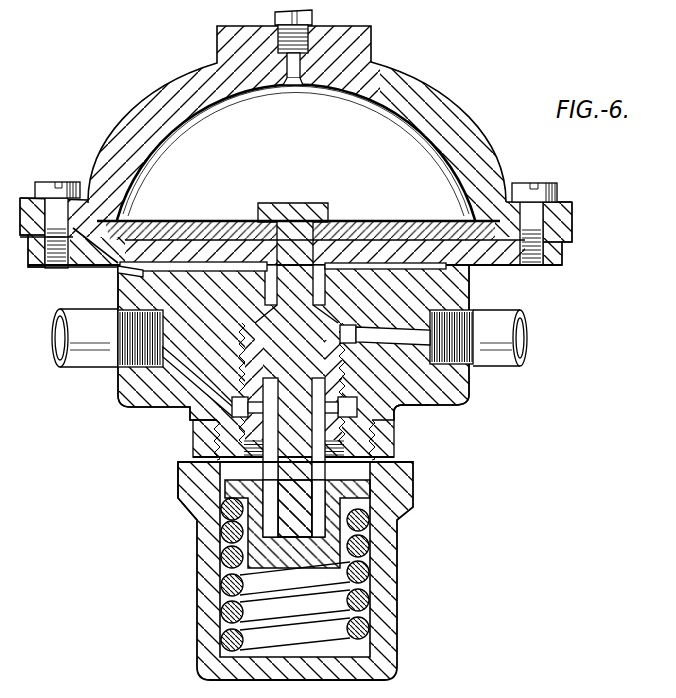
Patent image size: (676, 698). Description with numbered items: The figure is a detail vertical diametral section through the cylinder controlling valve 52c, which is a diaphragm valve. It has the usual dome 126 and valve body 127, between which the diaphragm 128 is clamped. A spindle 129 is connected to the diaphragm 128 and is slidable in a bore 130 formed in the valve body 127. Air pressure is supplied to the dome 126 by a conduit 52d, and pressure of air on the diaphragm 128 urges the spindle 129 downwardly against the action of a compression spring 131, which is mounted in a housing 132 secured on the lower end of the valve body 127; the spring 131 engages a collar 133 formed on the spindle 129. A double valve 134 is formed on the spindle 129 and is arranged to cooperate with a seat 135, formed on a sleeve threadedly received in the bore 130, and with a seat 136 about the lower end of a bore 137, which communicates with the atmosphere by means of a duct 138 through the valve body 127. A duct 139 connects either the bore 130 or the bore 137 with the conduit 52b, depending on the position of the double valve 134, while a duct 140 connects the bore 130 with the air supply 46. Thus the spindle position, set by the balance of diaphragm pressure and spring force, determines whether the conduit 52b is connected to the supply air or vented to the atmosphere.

The dome 126 is at (160, 105).
The conduit 52d is at (318, 13).
The diaphragm 128 is at (436, 240).
The valve body 127 is at (455, 296).
The spindle 129 is at (297, 212).
The bore 130 is at (395, 445).
The bore 137 is at (277, 284).
The duct 138 is at (120, 276).
The seat 136 is at (337, 320).
The duct 140 is at (195, 375).
The duct 139 is at (414, 344).
The double valve 134 is at (426, 404).
The seat 135 is at (192, 440).
The valve 52c is at (221, 472).
The housing 132 is at (380, 552).
The collar 133 is at (354, 490).
The compression spring 131 is at (370, 608).
The air supply 46 is at (78, 364).
The conduit 52b is at (505, 328).